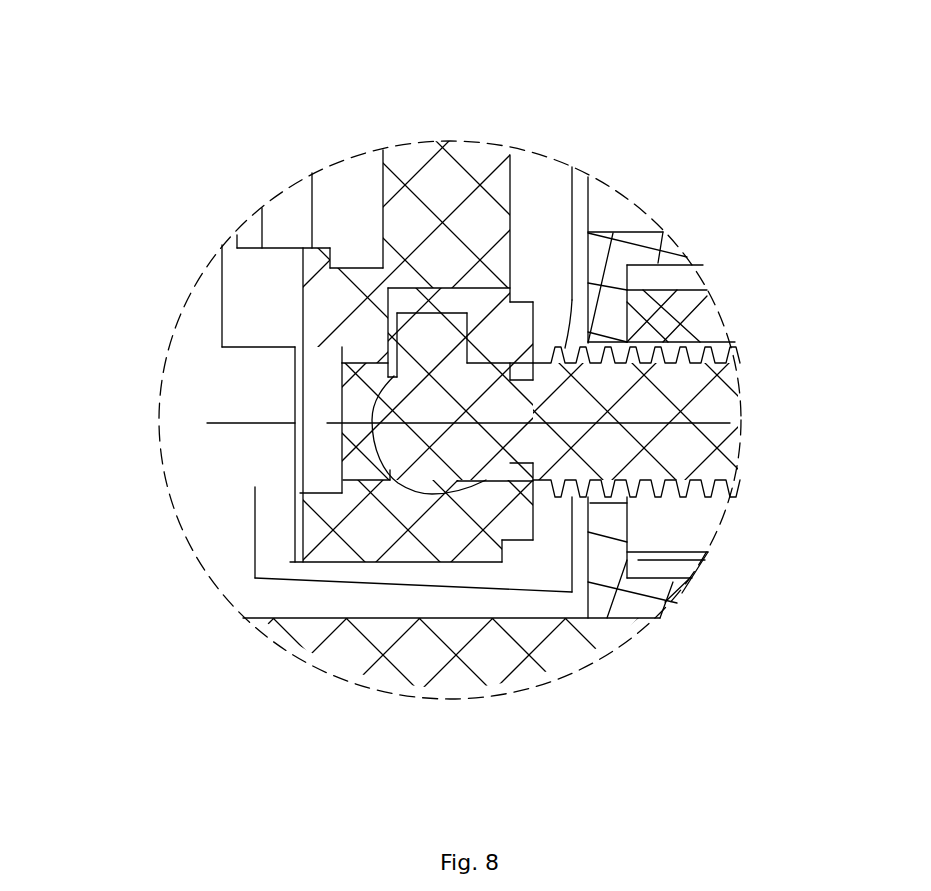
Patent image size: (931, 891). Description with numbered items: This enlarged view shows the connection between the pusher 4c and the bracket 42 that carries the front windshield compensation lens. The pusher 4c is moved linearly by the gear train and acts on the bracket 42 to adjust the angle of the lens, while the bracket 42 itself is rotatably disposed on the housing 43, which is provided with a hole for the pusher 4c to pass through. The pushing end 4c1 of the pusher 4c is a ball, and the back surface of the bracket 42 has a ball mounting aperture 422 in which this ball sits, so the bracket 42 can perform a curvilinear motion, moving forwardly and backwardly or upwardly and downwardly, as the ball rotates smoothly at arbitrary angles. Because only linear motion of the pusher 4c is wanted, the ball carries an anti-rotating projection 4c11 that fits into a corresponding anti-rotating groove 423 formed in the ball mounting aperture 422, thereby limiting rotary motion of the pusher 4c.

The bracket 42 is at (428, 210).
The ball mounting aperture 422 is at (502, 343).
The anti-rotating groove 423 is at (383, 268).
The pusher 4c is at (605, 442).
The pushing end 4c1 is at (430, 438).
The anti-rotating projection 4c11 is at (427, 336).
The housing 43 is at (423, 662).